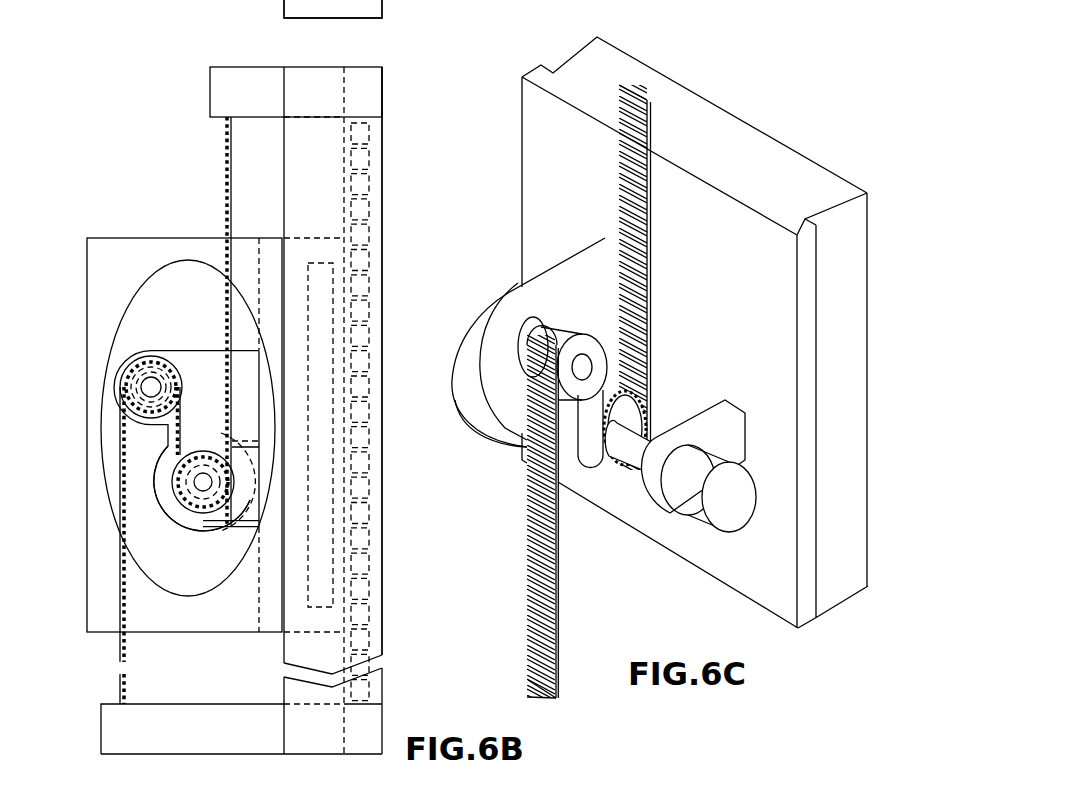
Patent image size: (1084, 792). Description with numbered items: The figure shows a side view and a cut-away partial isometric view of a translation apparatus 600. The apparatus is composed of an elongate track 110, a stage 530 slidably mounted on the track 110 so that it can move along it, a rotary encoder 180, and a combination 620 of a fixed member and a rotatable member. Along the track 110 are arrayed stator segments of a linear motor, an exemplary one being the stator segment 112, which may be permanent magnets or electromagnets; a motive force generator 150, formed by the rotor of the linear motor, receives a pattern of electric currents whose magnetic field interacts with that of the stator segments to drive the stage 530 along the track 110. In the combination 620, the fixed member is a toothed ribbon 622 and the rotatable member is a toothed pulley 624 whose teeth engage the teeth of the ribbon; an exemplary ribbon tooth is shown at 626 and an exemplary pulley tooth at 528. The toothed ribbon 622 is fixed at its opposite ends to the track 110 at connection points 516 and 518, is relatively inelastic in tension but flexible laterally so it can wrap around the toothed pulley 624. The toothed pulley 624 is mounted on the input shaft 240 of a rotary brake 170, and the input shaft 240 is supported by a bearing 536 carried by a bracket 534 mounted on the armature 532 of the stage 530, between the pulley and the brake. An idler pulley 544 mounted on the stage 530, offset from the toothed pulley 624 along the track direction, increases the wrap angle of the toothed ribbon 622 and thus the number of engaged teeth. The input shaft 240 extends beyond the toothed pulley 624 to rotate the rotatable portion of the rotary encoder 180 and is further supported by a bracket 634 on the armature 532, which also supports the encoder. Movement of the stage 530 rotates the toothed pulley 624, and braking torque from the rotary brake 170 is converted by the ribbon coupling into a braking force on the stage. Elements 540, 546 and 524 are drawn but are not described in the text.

In FIG. 6B, the translation apparatus 600 is at (402, 95).
In FIG. 6B, the track 110 is at (378, 205).
In FIG. 6B, the stator segment 112 is at (380, 131).
In FIG. 6B, the motive force generator 150 is at (320, 262).
In FIG. 6B, the connection point 516 is at (210, 88).
In FIG. 6B, the connection point 518 is at (178, 704).
In FIG. 6B, the stage 530 is at (113, 236).
In FIG. 6B, the armature 532 is at (284, 4).
In FIG. 6C, the armature 532 is at (541, 155).
In FIG. 6B, the bracket 534 is at (195, 350).
In FIG. 6B, the bearing 536 is at (176, 512).
In FIG. 6C, the bearing 536 is at (517, 296).
In FIG. 6B, the belt 540 is at (178, 372).
In FIG. 6C, the belt 540 is at (593, 345).
In FIG. 6B, the idler pulley 544 is at (152, 360).
In FIG. 6C, the idler pulley 544 is at (575, 324).
In FIG. 6B, the pulley 546 is at (130, 366).
In FIG. 6C, the pulley 546 is at (526, 333).
In FIG. 6B, the rotary brake 170 is at (203, 528).
In FIG. 6C, the rotary brake 170 is at (500, 430).
In FIG. 6B, the rotary encoder 180 is at (192, 520).
In FIG. 6B, the input shaft 240 is at (203, 458).
In FIG. 6C, the input shaft 240 is at (655, 440).
In FIG. 6C, the combination 620 is at (669, 336).
In FIG. 6B, the toothed ribbon 622 is at (225, 190).
In FIG. 6C, the toothed ribbon 622 is at (652, 132).
In FIG. 6B, the toothed pulley 624 is at (228, 518).
In FIG. 6C, the tooth of toothed ribbon 626 is at (527, 519).
In FIG. 6C, the pinion gear 524 is at (618, 466).
In FIG. 6C, the tooth of toothed pulley 528 is at (636, 470).
In FIG. 6C, the bracket 634 is at (716, 413).